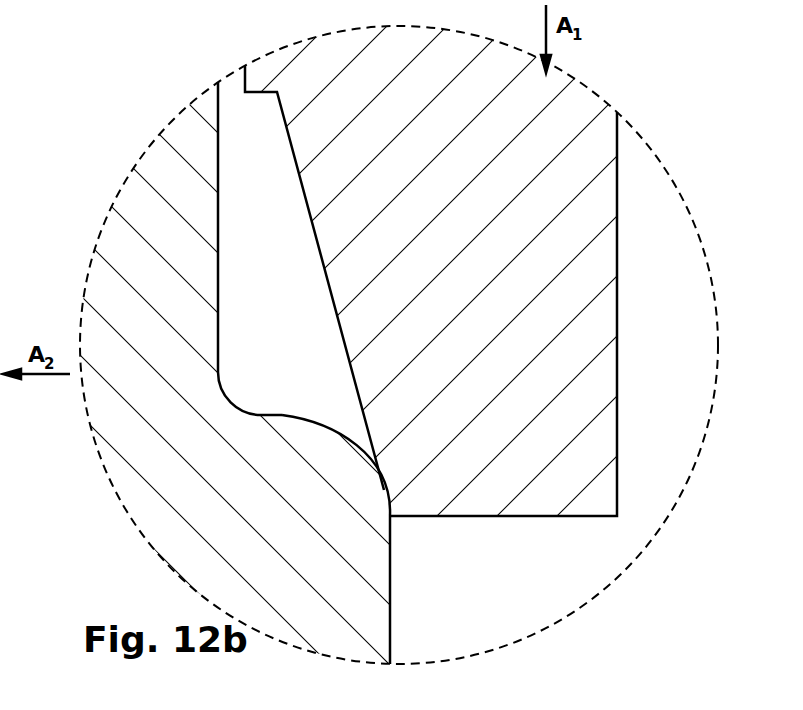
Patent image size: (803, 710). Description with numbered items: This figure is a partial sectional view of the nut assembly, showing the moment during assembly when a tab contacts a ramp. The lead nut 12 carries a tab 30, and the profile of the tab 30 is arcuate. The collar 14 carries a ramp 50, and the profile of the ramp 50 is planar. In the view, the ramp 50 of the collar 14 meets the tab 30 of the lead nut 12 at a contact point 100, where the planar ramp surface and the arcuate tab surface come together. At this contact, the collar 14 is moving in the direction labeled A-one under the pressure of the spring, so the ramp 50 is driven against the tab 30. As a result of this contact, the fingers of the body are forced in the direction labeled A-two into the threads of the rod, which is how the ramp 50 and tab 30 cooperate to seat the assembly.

The lead nut 12 is at (152, 211).
The collar 14 is at (550, 198).
The ramp 50 is at (328, 284).
The tab 30 is at (283, 415).
The contact point 100 is at (388, 490).